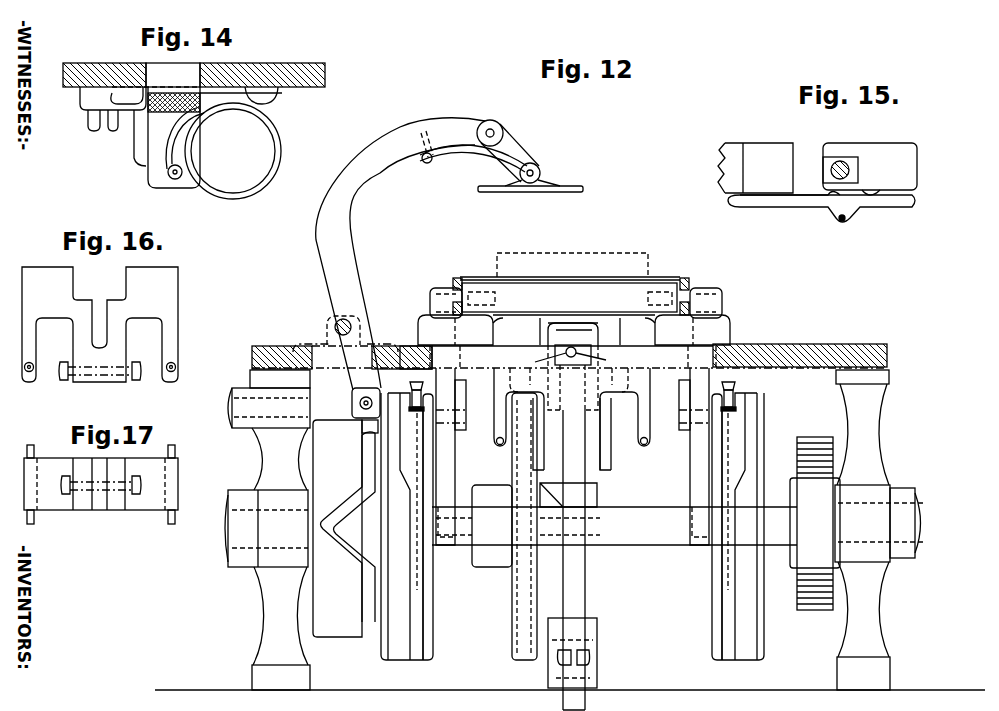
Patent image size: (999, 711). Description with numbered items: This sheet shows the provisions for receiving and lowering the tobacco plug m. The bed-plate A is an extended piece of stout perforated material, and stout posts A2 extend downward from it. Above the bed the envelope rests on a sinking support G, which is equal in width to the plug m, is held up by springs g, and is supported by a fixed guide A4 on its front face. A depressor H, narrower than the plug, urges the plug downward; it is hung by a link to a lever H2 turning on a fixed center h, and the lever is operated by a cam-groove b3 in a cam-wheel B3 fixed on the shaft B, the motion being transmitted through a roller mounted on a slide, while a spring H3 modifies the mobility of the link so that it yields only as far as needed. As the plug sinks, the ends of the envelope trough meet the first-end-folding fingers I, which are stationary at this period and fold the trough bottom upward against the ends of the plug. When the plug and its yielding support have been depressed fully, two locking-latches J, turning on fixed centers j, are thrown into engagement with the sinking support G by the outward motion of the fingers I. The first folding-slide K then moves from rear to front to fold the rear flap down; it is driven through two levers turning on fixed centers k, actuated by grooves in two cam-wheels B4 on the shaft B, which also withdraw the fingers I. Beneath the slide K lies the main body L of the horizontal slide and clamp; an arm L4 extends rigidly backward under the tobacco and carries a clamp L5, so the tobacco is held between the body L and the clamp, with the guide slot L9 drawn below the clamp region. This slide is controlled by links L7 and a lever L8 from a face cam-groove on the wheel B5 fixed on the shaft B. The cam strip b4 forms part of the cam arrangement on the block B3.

In FIG. 14, the bed-plate A is at (194, 65).
In FIG. 12, the bed-plate A is at (569, 347).
In FIG. 12, the posts A2 is at (575, 530).
In FIG. 14, the fixed guide A4 is at (113, 126).
In FIG. 12, the shaft B is at (614, 526).
In FIG. 12, the cam-wheel B3 is at (320, 592).
In FIG. 12, the cam-wheels B4 is at (572, 521).
In FIG. 12, the wheel B5 is at (524, 526).
In FIG. 12, the cam-groove b3 is at (350, 527).
In FIG. 12, the cam strip b4 is at (370, 445).
In FIG. 14, the sinking support G is at (215, 137).
In FIG. 16, the sinking support G is at (100, 324).
In FIG. 17, the sinking support G is at (101, 484).
In FIG. 15, the sinking support G is at (755, 168).
In FIG. 12, the sinking support G is at (572, 419).
In FIG. 14, the springs g is at (223, 143).
In FIG. 12, the springs g is at (572, 434).
In FIG. 12, the depressor H is at (530, 180).
In FIG. 12, the lever H2 is at (389, 268).
In FIG. 12, the spring H3 is at (473, 151).
In FIG. 12, the fixed center h is at (343, 324).
In FIG. 15, the first-end-folding fingers I is at (870, 169).
In FIG. 12, the first-end-folding fingers I is at (574, 341).
In FIG. 14, the locking-latches J is at (127, 97).
In FIG. 15, the locking-latches J is at (821, 206).
In FIG. 15, the fixed centers j is at (842, 221).
In FIG. 12, the first folding-slide K is at (576, 300).
In FIG. 12, the fixed centers k is at (572, 405).
In FIG. 12, the main body of slide L is at (573, 319).
In FIG. 12, the arm L4 is at (573, 346).
In FIG. 12, the clamp L5 is at (573, 328).
In FIG. 12, the links L7 is at (571, 354).
In FIG. 12, the lever L8 is at (568, 560).
In FIG. 12, the slot L9 is at (573, 377).
In FIG. 12, the plug m is at (572, 265).